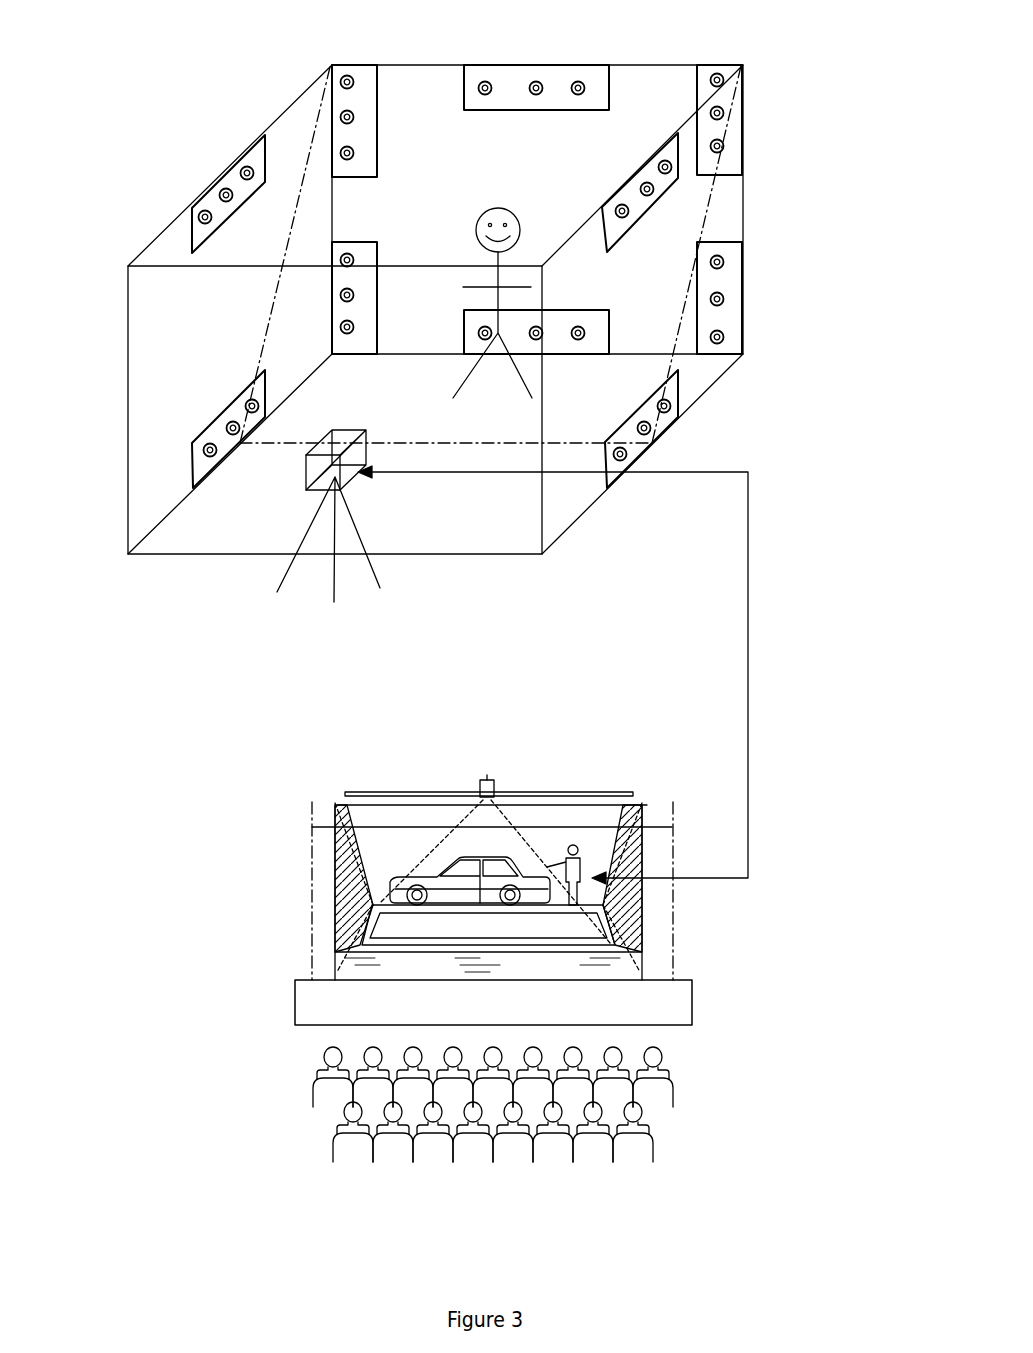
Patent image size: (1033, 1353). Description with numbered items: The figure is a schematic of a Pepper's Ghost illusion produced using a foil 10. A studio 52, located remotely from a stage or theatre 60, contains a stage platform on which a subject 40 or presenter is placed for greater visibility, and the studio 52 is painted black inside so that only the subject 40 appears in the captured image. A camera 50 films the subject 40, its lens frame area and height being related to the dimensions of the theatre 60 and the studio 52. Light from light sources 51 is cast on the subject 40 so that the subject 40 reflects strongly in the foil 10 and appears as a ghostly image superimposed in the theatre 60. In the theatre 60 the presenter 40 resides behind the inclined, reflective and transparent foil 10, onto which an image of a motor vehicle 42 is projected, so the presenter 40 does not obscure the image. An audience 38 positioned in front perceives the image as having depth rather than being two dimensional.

The foil 10 is at (673, 360).
The audience 38 is at (413, 1073).
The subject 40 is at (493, 206).
The motor vehicle 42 is at (477, 850).
The camera 50 is at (298, 492).
The light sources 51 is at (208, 420).
The studio 52 is at (118, 438).
The theatre 60 is at (335, 879).